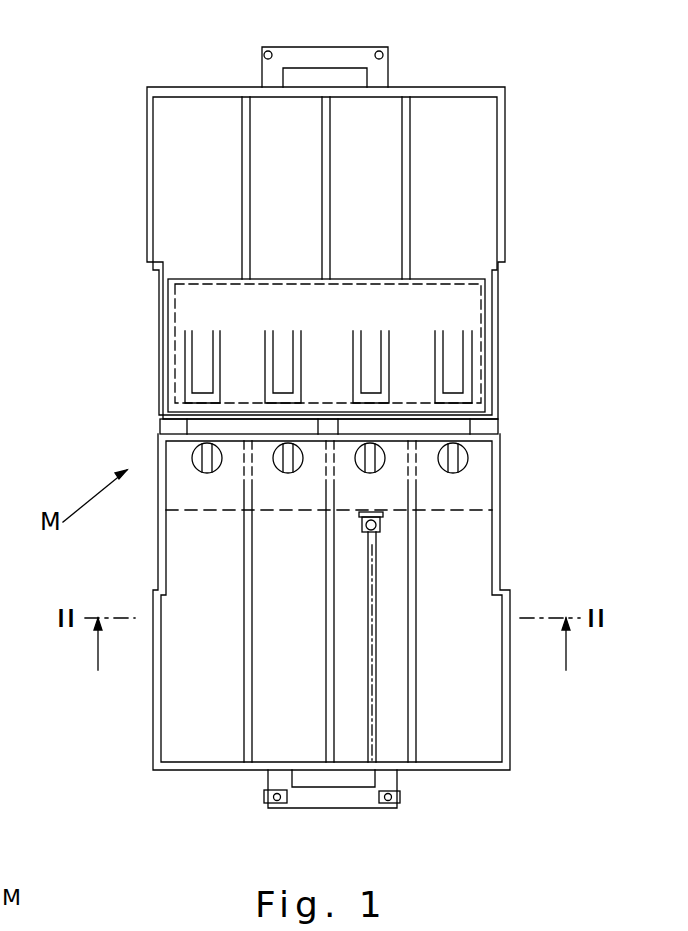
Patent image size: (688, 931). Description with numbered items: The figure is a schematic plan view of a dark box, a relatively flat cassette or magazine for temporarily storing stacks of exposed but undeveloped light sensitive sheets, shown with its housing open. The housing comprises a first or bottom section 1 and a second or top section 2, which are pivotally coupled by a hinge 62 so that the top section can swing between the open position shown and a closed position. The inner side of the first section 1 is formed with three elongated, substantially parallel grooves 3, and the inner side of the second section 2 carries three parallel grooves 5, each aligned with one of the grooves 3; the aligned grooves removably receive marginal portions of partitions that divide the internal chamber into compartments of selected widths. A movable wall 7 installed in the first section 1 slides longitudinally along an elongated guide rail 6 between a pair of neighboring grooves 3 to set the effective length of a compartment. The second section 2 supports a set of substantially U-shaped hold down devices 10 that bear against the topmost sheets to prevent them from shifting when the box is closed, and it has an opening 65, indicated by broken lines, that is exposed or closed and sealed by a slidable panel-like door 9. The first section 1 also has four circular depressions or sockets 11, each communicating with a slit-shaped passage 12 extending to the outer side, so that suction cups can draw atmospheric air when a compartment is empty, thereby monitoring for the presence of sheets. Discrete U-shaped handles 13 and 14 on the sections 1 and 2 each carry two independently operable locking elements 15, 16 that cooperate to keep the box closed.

The first or bottom section 1 is at (488, 682).
The second or top section 2 is at (485, 175).
The grooves 3 is at (248, 640).
The grooves 5 is at (245, 147).
The guide rail 6 is at (375, 707).
The wall 7 is at (380, 533).
The panel-like member or door 9 is at (420, 314).
The hold down devices 10 is at (357, 360).
The circular depressions or sockets 11 is at (463, 460).
The slit-shaped passage 12 is at (370, 470).
The U-shaped handle 13 is at (333, 803).
The U-shaped handle 14 is at (331, 47).
The locking element 15 is at (262, 54).
The locking element 16 is at (388, 56).
The hinge 62 is at (490, 427).
The opening 65 is at (168, 337).